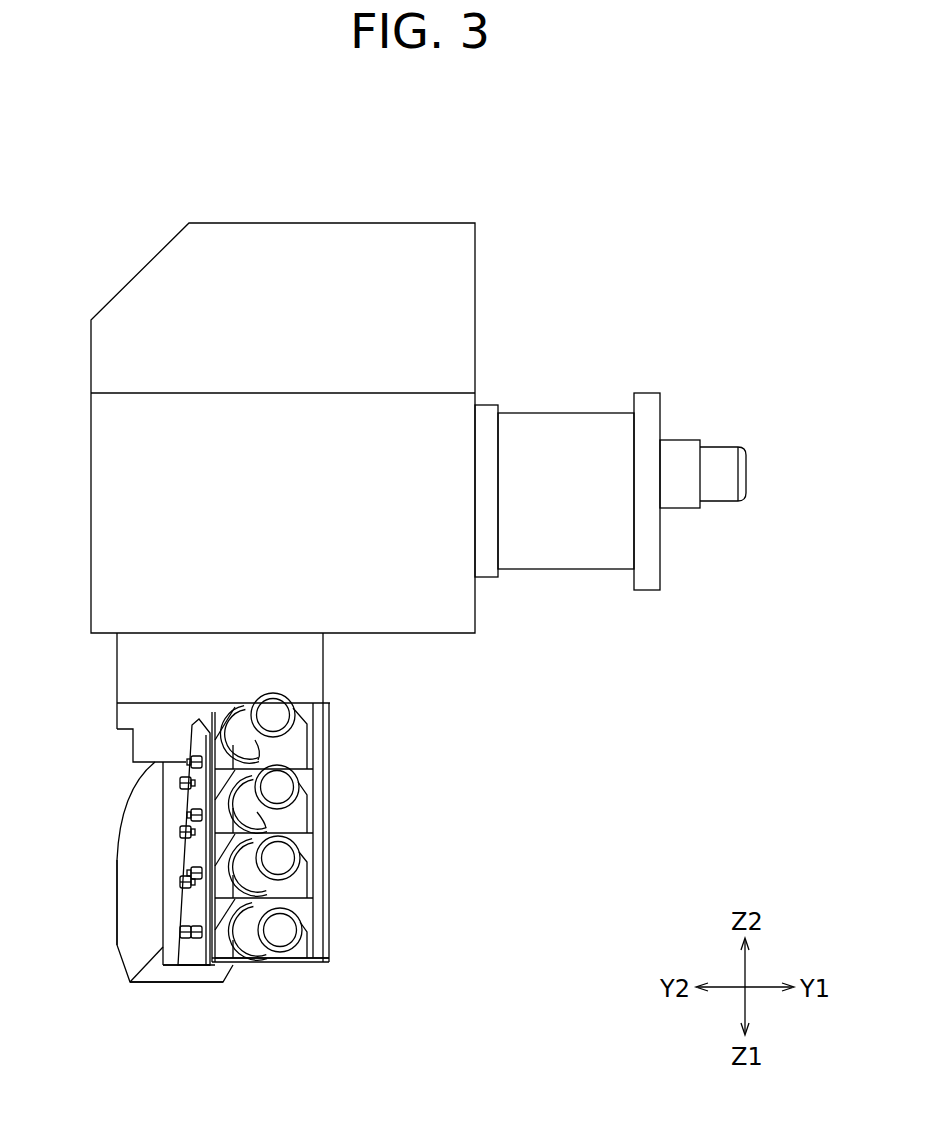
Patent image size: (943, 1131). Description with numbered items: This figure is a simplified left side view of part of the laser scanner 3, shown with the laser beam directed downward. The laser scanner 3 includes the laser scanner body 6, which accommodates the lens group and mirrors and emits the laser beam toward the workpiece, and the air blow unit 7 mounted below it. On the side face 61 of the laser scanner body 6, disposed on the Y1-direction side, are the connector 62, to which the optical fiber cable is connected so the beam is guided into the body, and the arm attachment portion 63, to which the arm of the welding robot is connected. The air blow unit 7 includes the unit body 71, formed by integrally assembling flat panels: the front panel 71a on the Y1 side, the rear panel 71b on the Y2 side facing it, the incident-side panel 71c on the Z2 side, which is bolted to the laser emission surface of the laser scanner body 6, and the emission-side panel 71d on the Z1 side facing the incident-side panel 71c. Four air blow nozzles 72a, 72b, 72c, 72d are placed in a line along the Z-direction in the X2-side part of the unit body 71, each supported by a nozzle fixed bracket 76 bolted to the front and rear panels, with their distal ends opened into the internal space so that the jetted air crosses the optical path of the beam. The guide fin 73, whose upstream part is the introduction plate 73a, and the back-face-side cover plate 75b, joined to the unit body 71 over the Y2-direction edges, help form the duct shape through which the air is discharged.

The laser scanner 3 is at (140, 143).
The laser scanner body 6 is at (402, 222).
The side face 61 is at (476, 540).
The connector 62 is at (727, 447).
The arm attachment portion 63 is at (660, 563).
The air blow unit 7 is at (145, 988).
The unit body 71 is at (333, 964).
The front panel 71a is at (338, 958).
The rear panel 71b is at (190, 852).
The incident-side panel 71c is at (148, 745).
The emission-side panel 71d is at (300, 964).
The air blow nozzle 72a is at (298, 930).
The air blow nozzle 72b is at (296, 856).
The air blow nozzle 72c is at (300, 786).
The air blow nozzle 72d is at (298, 712).
The guide fin 73 is at (205, 980).
The introduction plate 73a is at (170, 980).
The cover plate 75b is at (130, 932).
The nozzle fixed bracket 76 is at (293, 753).